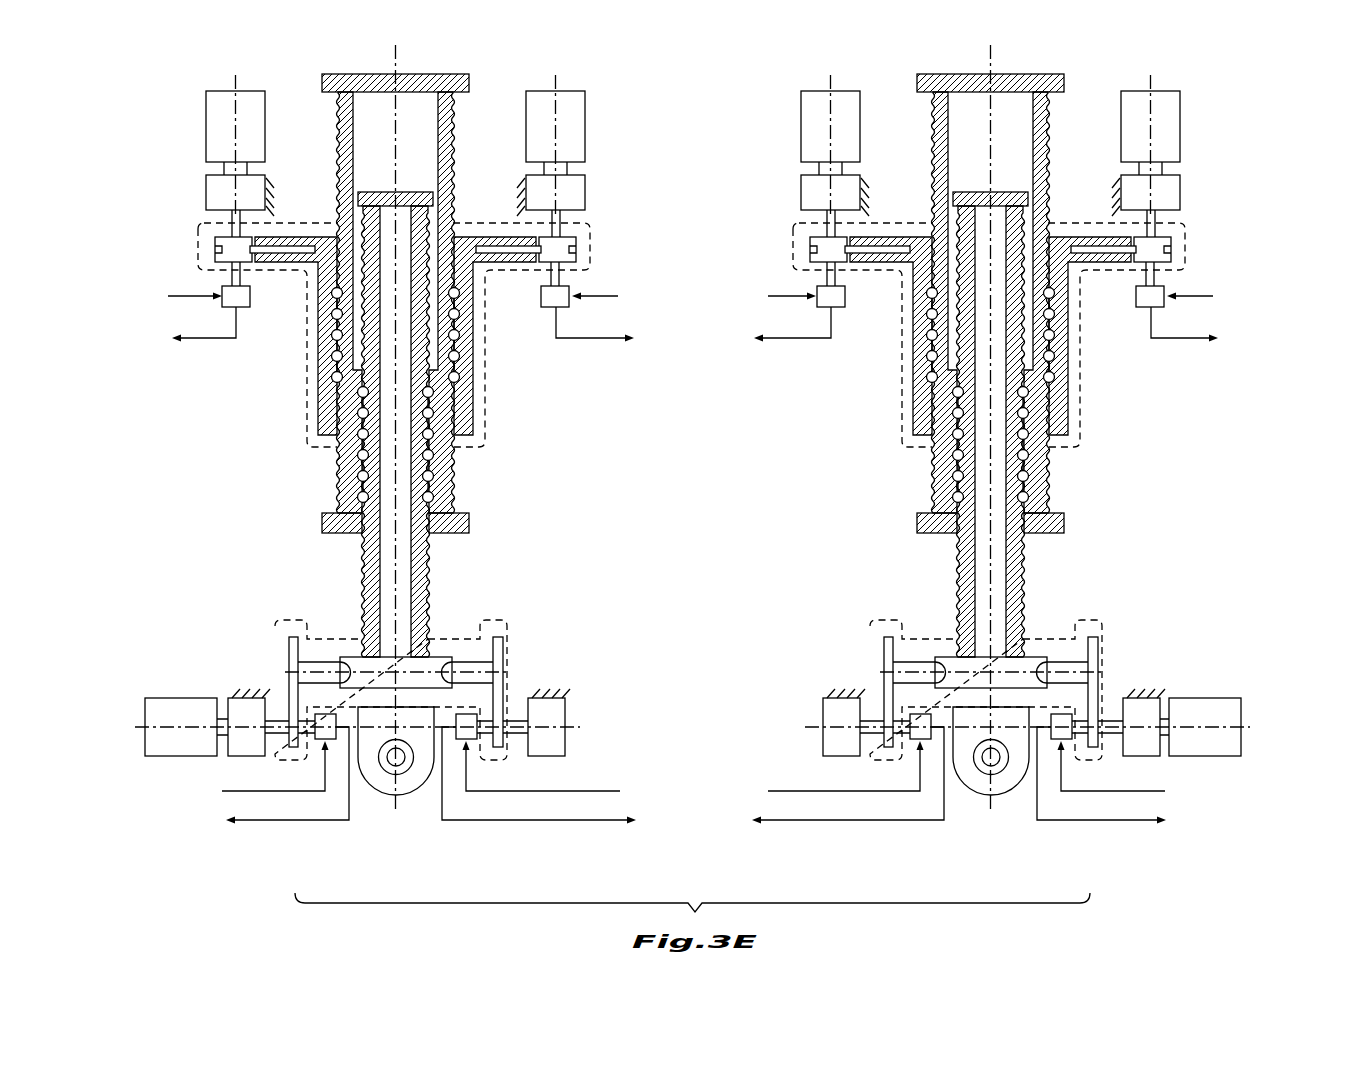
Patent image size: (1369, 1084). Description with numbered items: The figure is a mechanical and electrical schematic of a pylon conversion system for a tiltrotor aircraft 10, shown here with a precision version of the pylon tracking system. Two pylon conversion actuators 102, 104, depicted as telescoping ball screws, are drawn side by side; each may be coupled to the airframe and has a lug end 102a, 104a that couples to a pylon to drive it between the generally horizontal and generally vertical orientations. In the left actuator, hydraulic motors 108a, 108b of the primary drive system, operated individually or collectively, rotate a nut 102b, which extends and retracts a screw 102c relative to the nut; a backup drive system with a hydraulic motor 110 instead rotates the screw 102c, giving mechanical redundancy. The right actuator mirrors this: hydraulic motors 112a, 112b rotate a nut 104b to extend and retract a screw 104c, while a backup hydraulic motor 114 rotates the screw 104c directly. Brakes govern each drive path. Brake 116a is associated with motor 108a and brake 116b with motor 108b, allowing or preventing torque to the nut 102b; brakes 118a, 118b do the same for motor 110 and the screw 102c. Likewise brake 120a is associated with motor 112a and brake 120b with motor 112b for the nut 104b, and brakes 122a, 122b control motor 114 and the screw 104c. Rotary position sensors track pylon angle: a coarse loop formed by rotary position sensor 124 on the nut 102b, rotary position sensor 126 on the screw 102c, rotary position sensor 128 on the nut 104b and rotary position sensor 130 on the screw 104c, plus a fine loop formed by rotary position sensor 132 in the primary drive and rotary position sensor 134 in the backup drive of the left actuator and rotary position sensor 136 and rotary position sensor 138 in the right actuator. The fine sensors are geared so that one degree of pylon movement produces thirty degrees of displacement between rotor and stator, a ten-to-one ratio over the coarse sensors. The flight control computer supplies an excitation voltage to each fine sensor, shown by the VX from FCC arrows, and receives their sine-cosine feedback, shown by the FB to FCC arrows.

The tiltrotor aircraft 10 is at (1308, 83).
The pylon conversion actuator 102 is at (400, 74).
The lug end 102a is at (412, 795).
The nut 102b is at (473, 393).
The screw 102c is at (428, 565).
The pylon conversion actuator 104 is at (995, 74).
The lug end 104a is at (1007, 795).
The nut 104b is at (913, 393).
The screw 104c is at (958, 565).
The hydraulic motor 108a is at (206, 128).
The hydraulic motor 108b is at (585, 120).
The hydraulic motor 110 is at (173, 698).
The hydraulic motor 112a is at (1180, 120).
The hydraulic motor 112b is at (801, 128).
The hydraulic motor 114 is at (1233, 698).
The brake 116a is at (206, 190).
The brake 116b is at (585, 192).
The brake 118a is at (248, 698).
The brake 118b is at (544, 698).
The brake 120a is at (1180, 192).
The brake 120b is at (801, 190).
The brake 122a is at (1139, 698).
The brake 122b is at (843, 698).
The rotary position sensor 124 is at (250, 296).
The rotary position sensor 126 is at (324, 713).
The rotary position sensor 128 is at (1136, 296).
The rotary position sensor 130 is at (1062, 713).
The rotary position sensor 132 is at (541, 296).
The rotary position sensor 134 is at (467, 713).
The rotary position sensor 136 is at (845, 296).
The rotary position sensor 138 is at (919, 713).